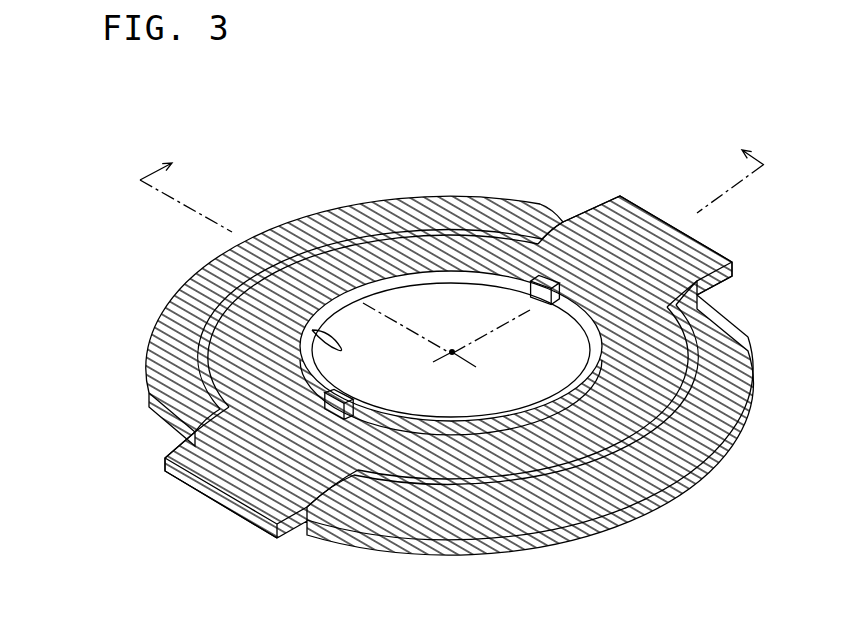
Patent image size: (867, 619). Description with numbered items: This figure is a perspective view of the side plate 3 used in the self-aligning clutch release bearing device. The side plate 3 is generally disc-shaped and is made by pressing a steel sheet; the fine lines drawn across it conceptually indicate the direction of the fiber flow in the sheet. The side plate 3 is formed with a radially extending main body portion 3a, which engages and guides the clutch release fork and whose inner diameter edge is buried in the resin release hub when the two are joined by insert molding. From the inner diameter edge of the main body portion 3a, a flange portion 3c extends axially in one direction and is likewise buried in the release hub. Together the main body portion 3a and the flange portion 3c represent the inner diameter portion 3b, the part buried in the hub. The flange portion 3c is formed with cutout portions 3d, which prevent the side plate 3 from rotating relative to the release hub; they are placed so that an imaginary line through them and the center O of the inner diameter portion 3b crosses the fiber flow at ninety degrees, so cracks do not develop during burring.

The side plate 3 is at (429, 322).
The main body portion 3a is at (610, 218).
The inner diameter portion 3b is at (248, 292).
The flange portion 3c is at (543, 412).
The cutout portions 3d is at (548, 285).